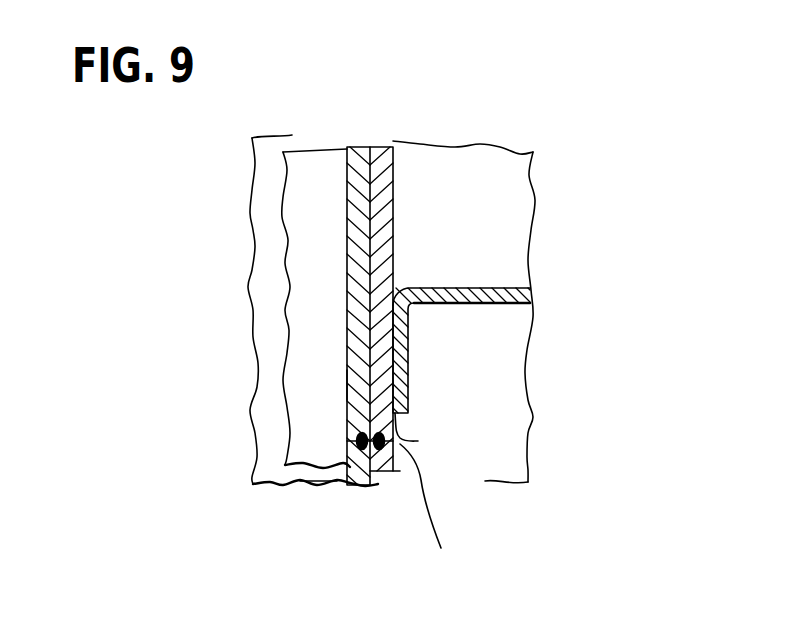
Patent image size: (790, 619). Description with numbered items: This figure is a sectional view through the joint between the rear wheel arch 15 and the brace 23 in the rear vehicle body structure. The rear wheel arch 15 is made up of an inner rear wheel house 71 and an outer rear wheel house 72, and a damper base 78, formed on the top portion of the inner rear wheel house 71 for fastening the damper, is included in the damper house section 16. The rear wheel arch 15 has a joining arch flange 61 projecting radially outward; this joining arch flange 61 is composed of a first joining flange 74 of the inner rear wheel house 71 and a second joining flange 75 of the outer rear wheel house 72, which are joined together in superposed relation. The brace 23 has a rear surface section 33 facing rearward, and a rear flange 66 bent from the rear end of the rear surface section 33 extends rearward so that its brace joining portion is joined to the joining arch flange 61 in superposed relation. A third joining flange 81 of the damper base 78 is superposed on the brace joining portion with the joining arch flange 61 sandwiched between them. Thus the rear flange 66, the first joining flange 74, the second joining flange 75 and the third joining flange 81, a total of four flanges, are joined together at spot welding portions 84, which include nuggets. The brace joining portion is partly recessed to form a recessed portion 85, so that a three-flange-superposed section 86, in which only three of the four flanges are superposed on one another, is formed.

The rear wheel arch 15 is at (238, 489).
The inner rear wheel house 71 is at (300, 480).
The damper house section 16 is at (283, 353).
The damper base 78 is at (307, 258).
The joining arch flange 61 is at (380, 252).
The first joining flange 74 is at (367, 145).
The second joining flange 75 is at (400, 270).
The third joining flange 81 is at (347, 386).
The outer rear wheel house 72 is at (528, 467).
The brace 23 is at (512, 330).
The rear surface section 33 is at (465, 287).
The rear flange 66 is at (408, 368).
The spot welding portion 84 is at (357, 441).
The recessed portion 85 is at (393, 441).
The three-flange-superposed section 86 is at (418, 442).